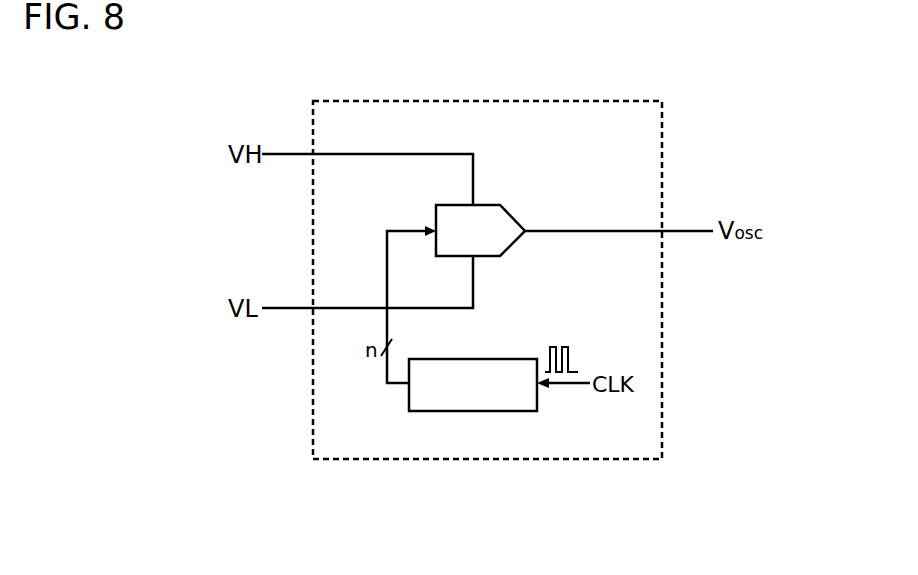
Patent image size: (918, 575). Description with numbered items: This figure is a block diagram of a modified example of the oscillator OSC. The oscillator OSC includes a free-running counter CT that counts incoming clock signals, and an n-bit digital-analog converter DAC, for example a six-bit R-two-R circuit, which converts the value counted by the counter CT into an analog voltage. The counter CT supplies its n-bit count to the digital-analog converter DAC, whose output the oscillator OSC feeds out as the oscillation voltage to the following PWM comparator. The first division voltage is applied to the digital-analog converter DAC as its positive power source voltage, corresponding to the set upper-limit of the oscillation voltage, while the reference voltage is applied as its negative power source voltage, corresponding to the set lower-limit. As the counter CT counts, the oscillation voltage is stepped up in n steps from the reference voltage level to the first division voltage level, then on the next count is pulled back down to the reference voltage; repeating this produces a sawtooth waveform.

The oscillator OSC is at (494, 100).
The digital-analog converter DAC is at (524, 194).
The counter CT is at (478, 357).